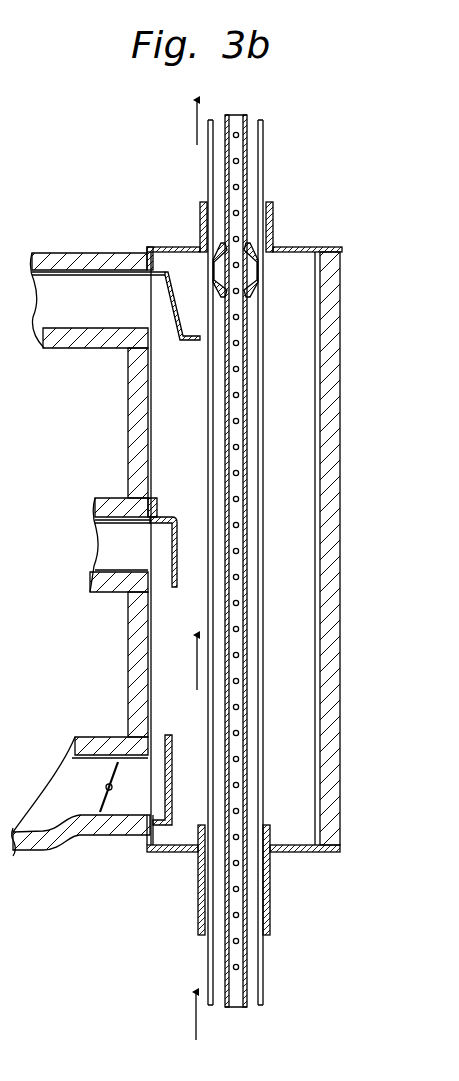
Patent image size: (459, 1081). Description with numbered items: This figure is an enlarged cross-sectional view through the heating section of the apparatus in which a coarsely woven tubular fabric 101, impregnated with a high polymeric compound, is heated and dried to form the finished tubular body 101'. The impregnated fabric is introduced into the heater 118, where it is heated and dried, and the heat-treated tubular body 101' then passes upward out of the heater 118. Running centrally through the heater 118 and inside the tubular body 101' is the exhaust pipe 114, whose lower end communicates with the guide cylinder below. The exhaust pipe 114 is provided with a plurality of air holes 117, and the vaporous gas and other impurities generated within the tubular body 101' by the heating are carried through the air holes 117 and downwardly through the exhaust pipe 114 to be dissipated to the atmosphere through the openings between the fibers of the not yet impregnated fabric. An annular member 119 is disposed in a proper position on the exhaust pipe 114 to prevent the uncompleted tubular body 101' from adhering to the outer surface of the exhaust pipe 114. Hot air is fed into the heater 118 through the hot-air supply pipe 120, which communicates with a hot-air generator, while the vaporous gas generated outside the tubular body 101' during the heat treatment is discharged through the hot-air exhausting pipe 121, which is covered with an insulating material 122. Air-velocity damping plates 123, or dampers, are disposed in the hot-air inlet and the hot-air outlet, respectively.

The tubular fabric 101 is at (262, 926).
The tubular body 101' is at (267, 484).
The exhaust pipe 114 is at (234, 122).
The air holes 117 is at (236, 556).
The heater 118 is at (163, 416).
The annular member 119 is at (213, 275).
The hot-air supply pipe 120 is at (62, 815).
The hot-air exhausting pipe 121 is at (56, 315).
The insulating material 122 is at (137, 472).
The air-velocity damping plates 123 is at (170, 303).